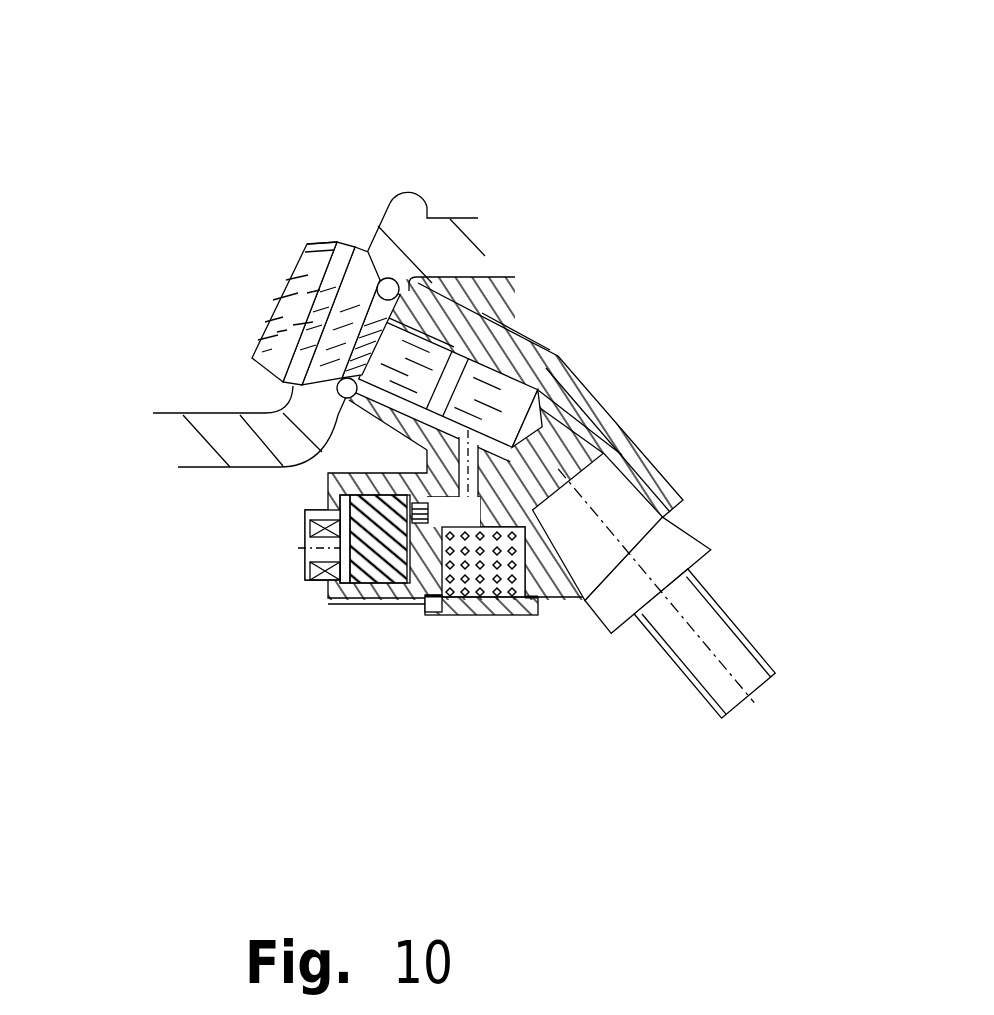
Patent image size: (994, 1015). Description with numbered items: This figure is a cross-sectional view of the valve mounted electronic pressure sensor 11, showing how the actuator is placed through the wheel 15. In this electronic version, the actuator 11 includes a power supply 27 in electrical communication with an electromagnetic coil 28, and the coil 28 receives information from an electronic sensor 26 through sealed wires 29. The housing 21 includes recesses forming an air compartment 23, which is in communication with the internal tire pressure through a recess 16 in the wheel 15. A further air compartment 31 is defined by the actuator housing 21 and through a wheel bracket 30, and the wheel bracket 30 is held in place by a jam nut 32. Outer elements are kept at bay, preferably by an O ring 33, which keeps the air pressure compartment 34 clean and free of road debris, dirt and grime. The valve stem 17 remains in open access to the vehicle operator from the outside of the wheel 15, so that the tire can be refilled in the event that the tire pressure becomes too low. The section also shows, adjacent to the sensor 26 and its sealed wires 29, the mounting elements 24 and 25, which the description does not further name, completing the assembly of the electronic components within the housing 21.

The valve mounted electronic pressure sensor 11 is at (596, 303).
The wheel 15 is at (424, 206).
The recess 16 is at (377, 273).
The valve stem 17 is at (712, 537).
The housing 21 is at (563, 358).
The air compartment 23 is at (472, 505).
The circuit board 24 is at (528, 617).
The contact 25 is at (426, 611).
The electronic sensor 26 is at (466, 600).
The power supply 27 is at (372, 580).
The electromagnetic coil 28 is at (302, 568).
The sealed wires 29 is at (413, 496).
The wheel bracket 30 is at (281, 381).
The air compartment 31 is at (300, 290).
The jam nut 32 is at (315, 240).
The O ring 33 is at (412, 286).
The air pressure compartment 34 is at (402, 396).